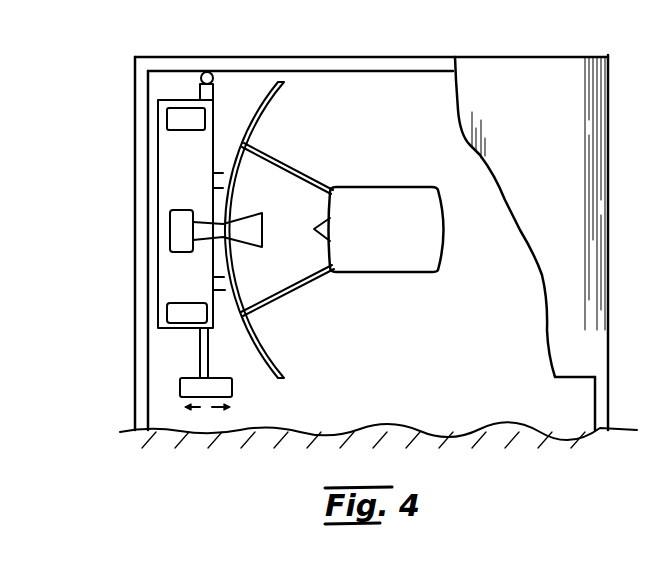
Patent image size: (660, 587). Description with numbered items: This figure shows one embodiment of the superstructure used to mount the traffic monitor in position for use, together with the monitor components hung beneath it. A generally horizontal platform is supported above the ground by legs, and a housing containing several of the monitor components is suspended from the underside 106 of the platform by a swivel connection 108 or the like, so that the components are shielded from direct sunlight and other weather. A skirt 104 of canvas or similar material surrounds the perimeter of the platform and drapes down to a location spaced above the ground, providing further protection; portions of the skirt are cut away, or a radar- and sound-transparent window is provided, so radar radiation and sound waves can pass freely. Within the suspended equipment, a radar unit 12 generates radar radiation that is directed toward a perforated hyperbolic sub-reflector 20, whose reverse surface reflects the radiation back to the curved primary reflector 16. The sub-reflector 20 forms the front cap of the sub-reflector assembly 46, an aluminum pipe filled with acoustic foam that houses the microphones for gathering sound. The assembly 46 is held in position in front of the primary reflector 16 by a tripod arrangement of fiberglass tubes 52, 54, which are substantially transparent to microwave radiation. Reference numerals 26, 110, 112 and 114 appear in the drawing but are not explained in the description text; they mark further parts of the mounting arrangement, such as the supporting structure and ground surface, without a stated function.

The radar unit 12 is at (180, 208).
The primary reflector 16 is at (258, 122).
The sub-reflector 20 is at (336, 188).
The drive unit 26 is at (178, 302).
The sub-reflector assembly 46 is at (386, 273).
The tube 52 is at (281, 162).
The tube 54 is at (300, 292).
The skirt 104 is at (540, 183).
The underside of the platform 106 is at (253, 72).
The swivel connection 108 is at (205, 72).
The top rail 110 is at (308, 57).
The floor 112 is at (418, 428).
The support posts 114 is at (137, 352).